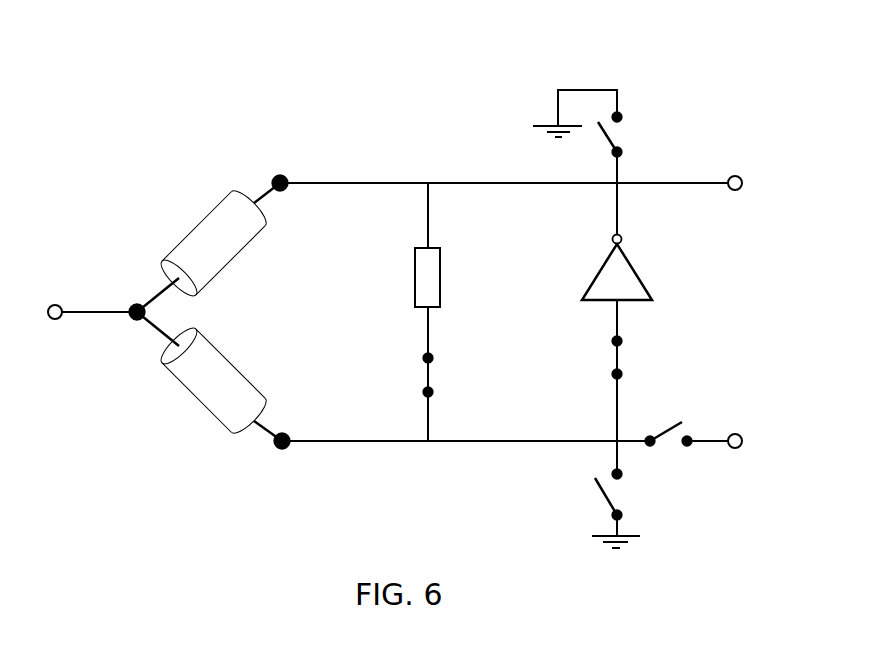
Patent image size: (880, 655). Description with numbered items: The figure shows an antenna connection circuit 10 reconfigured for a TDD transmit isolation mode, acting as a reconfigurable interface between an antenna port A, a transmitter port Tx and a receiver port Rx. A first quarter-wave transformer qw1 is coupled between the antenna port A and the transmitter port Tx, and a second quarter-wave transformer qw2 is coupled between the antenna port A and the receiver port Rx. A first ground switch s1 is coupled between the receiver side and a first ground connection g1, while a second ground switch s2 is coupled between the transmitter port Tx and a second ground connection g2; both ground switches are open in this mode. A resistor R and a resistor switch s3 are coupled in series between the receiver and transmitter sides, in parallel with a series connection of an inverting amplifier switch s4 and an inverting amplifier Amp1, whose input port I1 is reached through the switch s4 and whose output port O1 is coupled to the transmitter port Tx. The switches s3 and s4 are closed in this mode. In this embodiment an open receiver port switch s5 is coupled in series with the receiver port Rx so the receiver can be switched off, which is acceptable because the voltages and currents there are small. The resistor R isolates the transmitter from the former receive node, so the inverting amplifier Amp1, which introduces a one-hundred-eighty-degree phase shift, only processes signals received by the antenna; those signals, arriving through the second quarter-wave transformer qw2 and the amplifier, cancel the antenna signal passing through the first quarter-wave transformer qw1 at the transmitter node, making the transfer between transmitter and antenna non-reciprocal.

The antenna connection circuit 10 is at (236, 129).
The antenna port A is at (54, 305).
The first quarter-wave transformer qw1 is at (195, 228).
The second quarter-wave transformer qw2 is at (200, 395).
The resistor R is at (440, 275).
The resistor switch s3 is at (423, 392).
The transmitter port Tx is at (736, 176).
The second ground switch s2 is at (622, 151).
The second ground connection g2 is at (538, 124).
The inverting amplifier Amp1 is at (637, 265).
The output port O1 is at (612, 237).
The input port I1 is at (623, 302).
The inverting amplifier switch s4 is at (612, 375).
The receiver port switch s5 is at (686, 434).
The receiver port Rx is at (739, 434).
The first ground switch s1 is at (622, 474).
The first ground connection g1 is at (640, 536).